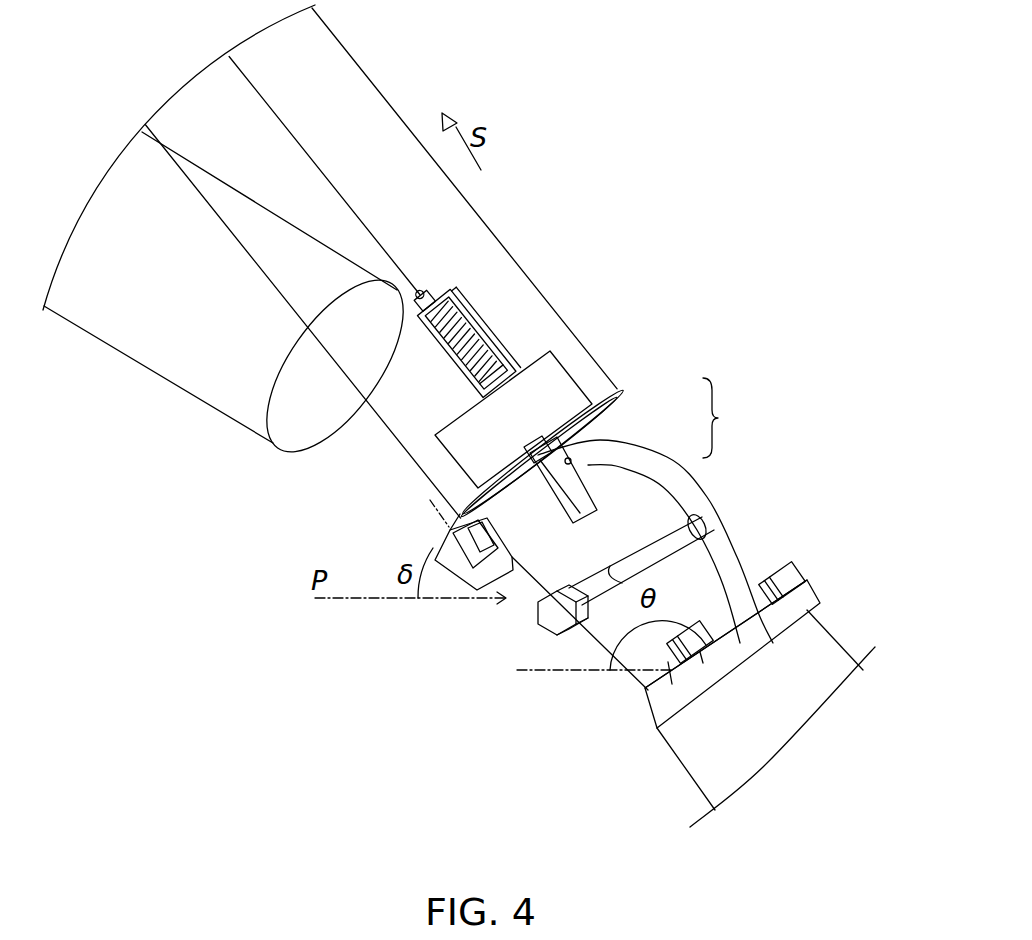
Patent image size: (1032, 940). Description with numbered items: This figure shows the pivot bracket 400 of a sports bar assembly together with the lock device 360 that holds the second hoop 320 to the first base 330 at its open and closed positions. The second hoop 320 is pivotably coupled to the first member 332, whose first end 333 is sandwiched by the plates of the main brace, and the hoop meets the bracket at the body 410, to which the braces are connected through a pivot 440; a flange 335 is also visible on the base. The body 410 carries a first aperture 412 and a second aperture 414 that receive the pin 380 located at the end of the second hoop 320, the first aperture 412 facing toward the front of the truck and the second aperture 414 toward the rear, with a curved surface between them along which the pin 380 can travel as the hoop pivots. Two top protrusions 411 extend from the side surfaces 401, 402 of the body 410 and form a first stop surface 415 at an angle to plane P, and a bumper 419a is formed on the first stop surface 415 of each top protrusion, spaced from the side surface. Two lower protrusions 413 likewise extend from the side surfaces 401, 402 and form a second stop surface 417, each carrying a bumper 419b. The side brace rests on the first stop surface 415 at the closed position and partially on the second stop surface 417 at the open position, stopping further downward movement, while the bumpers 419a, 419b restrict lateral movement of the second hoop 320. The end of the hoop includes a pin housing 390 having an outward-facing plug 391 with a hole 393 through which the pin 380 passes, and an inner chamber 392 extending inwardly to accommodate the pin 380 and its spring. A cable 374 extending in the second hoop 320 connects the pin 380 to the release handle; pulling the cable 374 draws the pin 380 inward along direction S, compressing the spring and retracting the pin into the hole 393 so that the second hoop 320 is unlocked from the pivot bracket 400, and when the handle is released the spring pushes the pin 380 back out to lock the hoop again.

The second hoop 320 is at (381, 106).
The first base 330 is at (837, 638).
The first member 332 is at (120, 322).
The first end of the first member 333 is at (247, 402).
The flange 335 is at (688, 762).
The lock device 360 is at (735, 418).
The cable 374 is at (320, 172).
The pin 380 is at (548, 468).
The pin housing 390 is at (500, 358).
The plug 391 is at (545, 431).
The inner chamber 392 is at (462, 300).
The hole 393 is at (615, 402).
The first pivot bracket 400 is at (703, 180).
The side surface 401 is at (610, 634).
The side surface 402 is at (728, 535).
The body 410 is at (680, 485).
The top protrusions 411 is at (445, 540).
The first aperture 412 is at (576, 458).
The lower protrusions 413 is at (705, 664).
The second aperture 414 is at (703, 518).
The first stop surface 415 is at (512, 553).
The second stop surface 417 is at (742, 632).
The bumper 419a is at (484, 536).
The bumper 419b is at (800, 563).
The pivot 440 is at (552, 625).